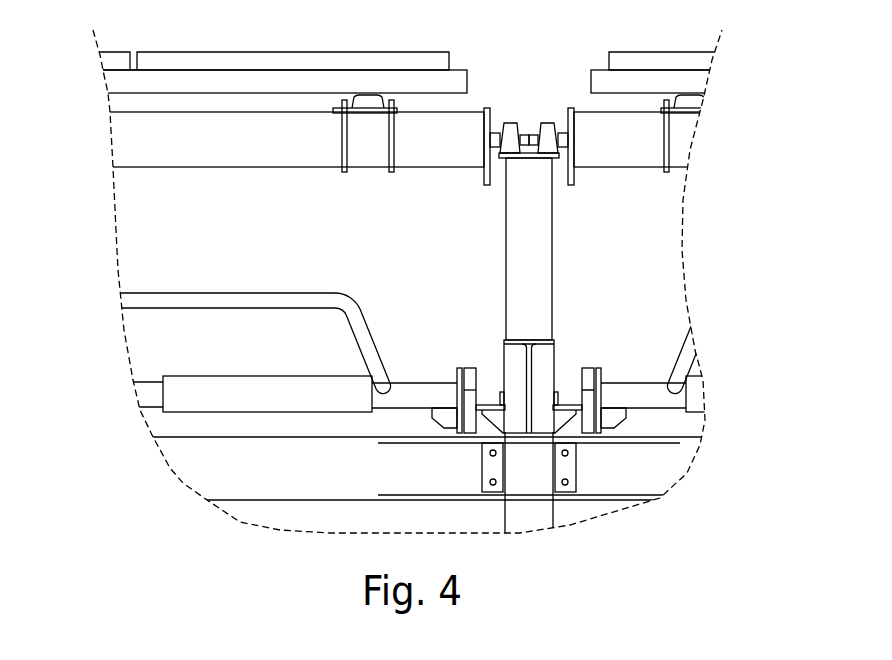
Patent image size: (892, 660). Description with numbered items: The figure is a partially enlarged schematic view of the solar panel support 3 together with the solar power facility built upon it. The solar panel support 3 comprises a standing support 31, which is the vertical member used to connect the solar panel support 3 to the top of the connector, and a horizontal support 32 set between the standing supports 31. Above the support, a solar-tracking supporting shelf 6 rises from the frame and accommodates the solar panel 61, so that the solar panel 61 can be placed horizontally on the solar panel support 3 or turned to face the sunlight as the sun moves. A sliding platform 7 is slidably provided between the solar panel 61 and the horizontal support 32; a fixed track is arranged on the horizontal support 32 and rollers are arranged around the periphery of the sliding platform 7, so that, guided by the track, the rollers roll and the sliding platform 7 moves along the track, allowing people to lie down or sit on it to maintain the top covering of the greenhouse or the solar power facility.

The solar panel 61 is at (263, 60).
The solar-tracking supporting shelf 6 is at (532, 227).
The sliding platform 7 is at (428, 381).
The solar panel support 3 is at (683, 525).
The horizontal support 32 is at (612, 488).
The standing support 31 is at (543, 513).